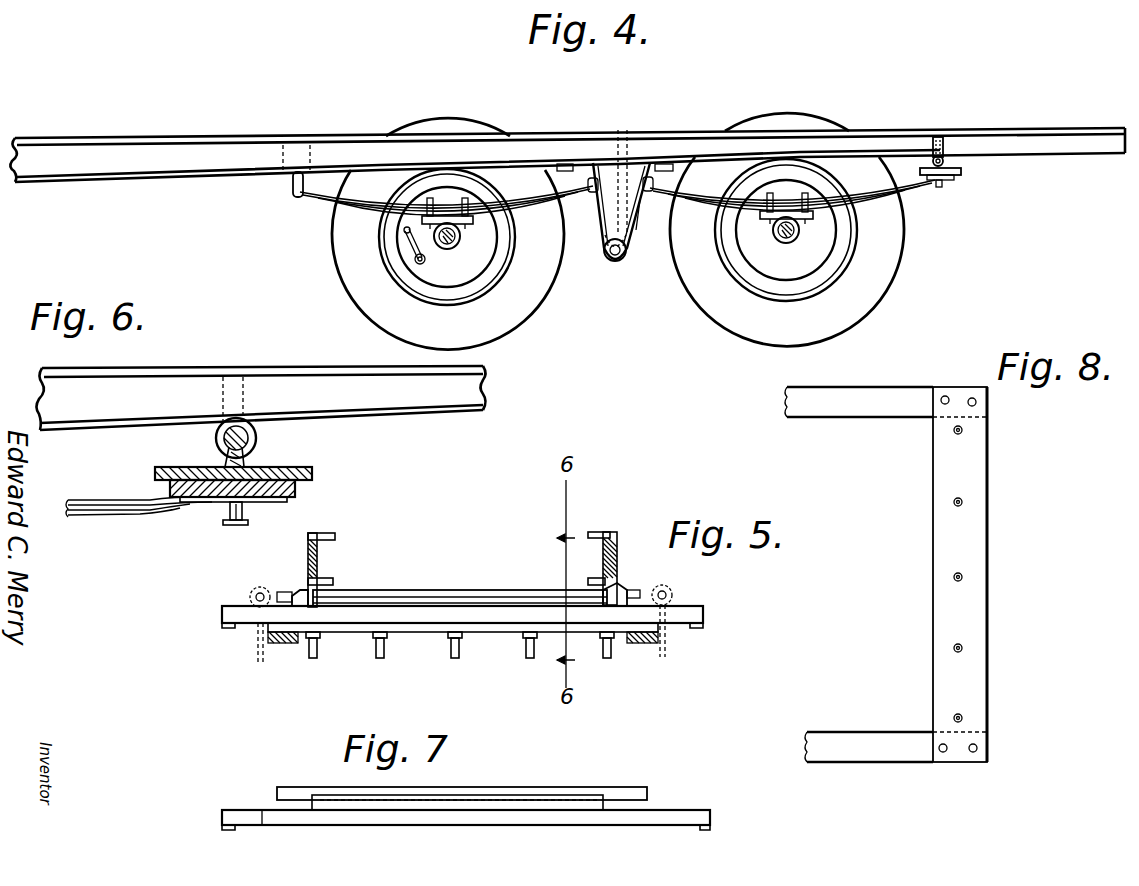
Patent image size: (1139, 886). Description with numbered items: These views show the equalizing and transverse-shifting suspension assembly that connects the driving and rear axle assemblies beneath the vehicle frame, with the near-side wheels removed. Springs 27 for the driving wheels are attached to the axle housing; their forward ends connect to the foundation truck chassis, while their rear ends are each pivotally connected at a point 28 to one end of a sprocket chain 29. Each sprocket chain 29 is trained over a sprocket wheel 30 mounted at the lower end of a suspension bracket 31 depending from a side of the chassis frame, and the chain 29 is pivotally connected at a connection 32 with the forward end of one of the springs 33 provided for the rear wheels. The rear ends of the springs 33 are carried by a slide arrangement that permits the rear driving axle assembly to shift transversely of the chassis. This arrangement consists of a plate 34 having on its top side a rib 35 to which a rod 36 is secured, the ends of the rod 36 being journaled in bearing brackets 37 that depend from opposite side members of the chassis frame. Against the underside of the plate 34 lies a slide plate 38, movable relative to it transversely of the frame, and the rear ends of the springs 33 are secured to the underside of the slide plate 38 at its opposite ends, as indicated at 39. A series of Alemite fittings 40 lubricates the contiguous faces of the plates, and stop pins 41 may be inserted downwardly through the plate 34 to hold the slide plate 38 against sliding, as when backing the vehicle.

In FIG. 4, the springs 27 is at (528, 204).
In FIG. 4, the pivot point 28 is at (603, 157).
In FIG. 4, the sprocket chain 29 is at (598, 262).
In FIG. 4, the sprocket wheels 30 is at (628, 265).
In FIG. 4, the suspension brackets 31 is at (641, 205).
In FIG. 4, the pivotal connection 32 is at (650, 165).
In FIG. 4, the springs 33 is at (706, 213).
In FIG. 6, the springs 33 is at (93, 522).
In FIG. 8, the springs 33 is at (882, 410).
In FIG. 4, the plate 34 is at (961, 170).
In FIG. 6, the plate 34 is at (315, 473).
In FIG. 5, the plate 34 is at (680, 615).
In FIG. 7, the plate 34 is at (677, 808).
In FIG. 6, the rib 35 is at (220, 460).
In FIG. 5, the rib 35 is at (402, 603).
In FIG. 7, the rib 35 is at (522, 803).
In FIG. 4, the rod 36 is at (943, 159).
In FIG. 6, the rod 36 is at (223, 428).
In FIG. 5, the rod 36 is at (460, 579).
In FIG. 7, the rod 36 is at (585, 788).
In FIG. 4, the bearing brackets 37 is at (937, 137).
In FIG. 6, the bearing brackets 37 is at (258, 445).
In FIG. 5, the bearing brackets 37 is at (307, 582).
In FIG. 4, the slide plate 38 is at (952, 182).
In FIG. 6, the slide plate 38 is at (297, 493).
In FIG. 5, the slide plate 38 is at (425, 637).
In FIG. 8, the slide plate 38 is at (988, 556).
In FIG. 8, the spring securing means 39 is at (947, 752).
In FIG. 6, the Alemite fittings 40 is at (235, 526).
In FIG. 5, the Alemite fittings 40 is at (377, 654).
In FIG. 5, the stop pins 41 is at (266, 583).